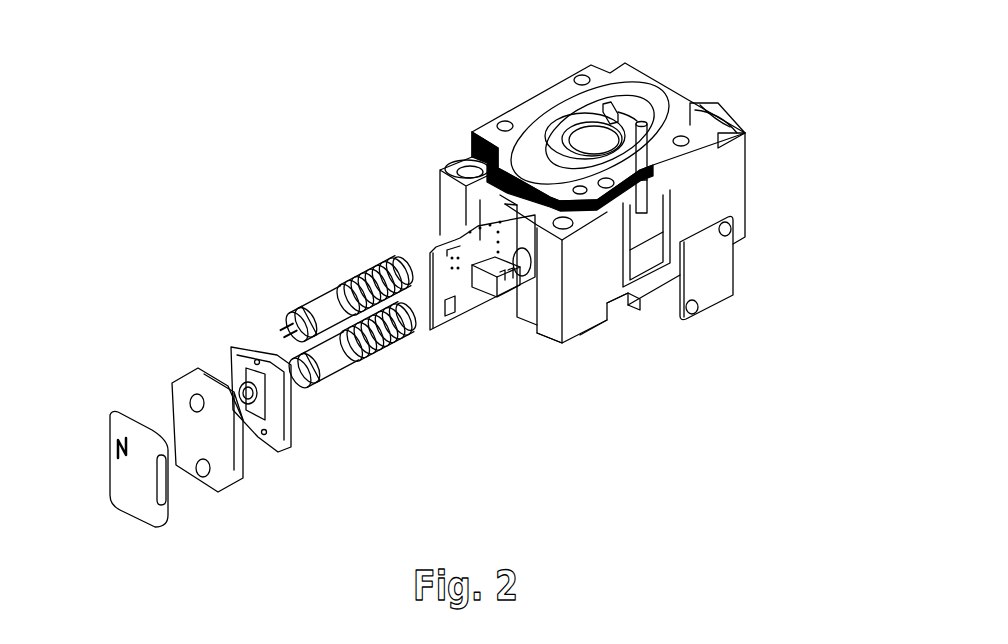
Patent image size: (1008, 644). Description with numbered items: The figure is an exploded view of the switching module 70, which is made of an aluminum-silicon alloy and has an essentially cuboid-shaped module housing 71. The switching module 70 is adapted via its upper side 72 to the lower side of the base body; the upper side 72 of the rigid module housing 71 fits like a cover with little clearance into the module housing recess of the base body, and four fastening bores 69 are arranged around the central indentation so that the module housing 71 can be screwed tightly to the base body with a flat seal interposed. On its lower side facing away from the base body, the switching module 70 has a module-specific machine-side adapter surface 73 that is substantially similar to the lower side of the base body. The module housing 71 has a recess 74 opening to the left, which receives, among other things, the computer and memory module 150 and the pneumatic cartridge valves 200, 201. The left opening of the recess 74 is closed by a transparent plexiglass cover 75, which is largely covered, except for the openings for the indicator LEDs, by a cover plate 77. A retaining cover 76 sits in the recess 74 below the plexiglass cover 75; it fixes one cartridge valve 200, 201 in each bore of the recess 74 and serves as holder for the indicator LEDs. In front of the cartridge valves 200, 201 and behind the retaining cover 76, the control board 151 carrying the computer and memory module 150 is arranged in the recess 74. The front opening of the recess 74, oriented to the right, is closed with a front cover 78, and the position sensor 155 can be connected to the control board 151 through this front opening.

The fastening bores 69 is at (720, 145).
The switching module 70 is at (605, 325).
The module housing 71 is at (723, 185).
The upper side 72 is at (685, 123).
The machine-side adapter surface 73 is at (637, 298).
The recess 74 is at (523, 293).
The plexiglass cover 75 is at (175, 393).
The retaining cover 76 is at (240, 350).
The cover plate 77 is at (122, 423).
The front cover 78 is at (715, 272).
The computer and memory module 150 is at (482, 312).
The control board 151 is at (437, 317).
The position sensor 155 is at (641, 123).
The cartridge valve 200 is at (327, 363).
The cartridge valve 201 is at (332, 312).